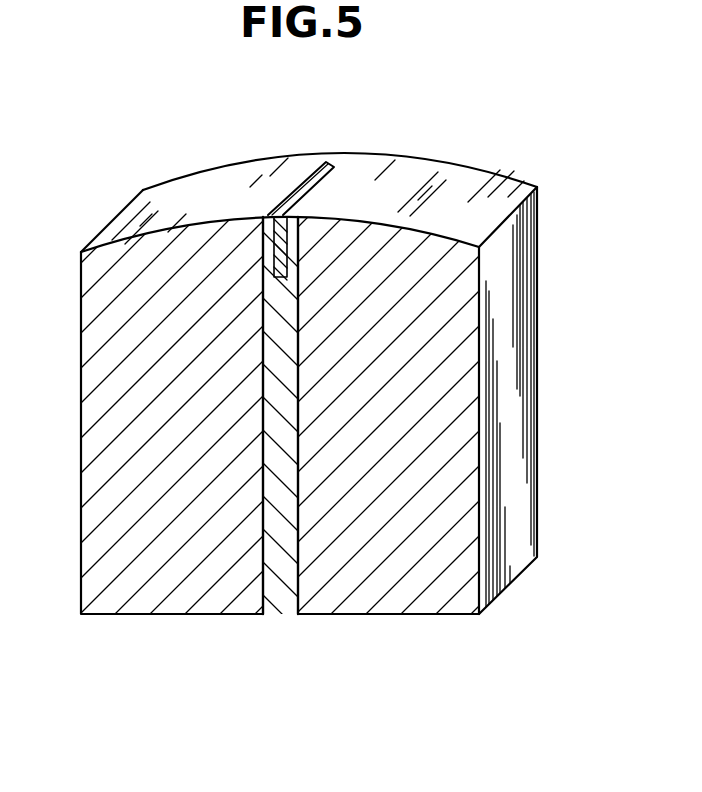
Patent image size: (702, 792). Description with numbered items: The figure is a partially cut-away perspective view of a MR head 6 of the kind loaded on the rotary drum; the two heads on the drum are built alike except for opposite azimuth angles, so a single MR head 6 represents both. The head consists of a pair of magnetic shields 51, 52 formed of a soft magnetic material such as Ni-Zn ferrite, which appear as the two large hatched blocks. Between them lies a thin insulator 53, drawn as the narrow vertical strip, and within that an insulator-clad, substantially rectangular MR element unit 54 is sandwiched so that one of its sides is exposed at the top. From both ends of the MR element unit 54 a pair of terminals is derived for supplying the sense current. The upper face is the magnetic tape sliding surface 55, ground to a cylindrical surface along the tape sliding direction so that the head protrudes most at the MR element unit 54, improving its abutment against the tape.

The MR head 6 is at (437, 153).
The magnetic shield 51 is at (169, 604).
The magnetic shield 52 is at (415, 600).
The insulator 53 is at (283, 602).
The MR element unit 54 is at (336, 156).
The magnetic tape sliding surface 55 is at (497, 187).